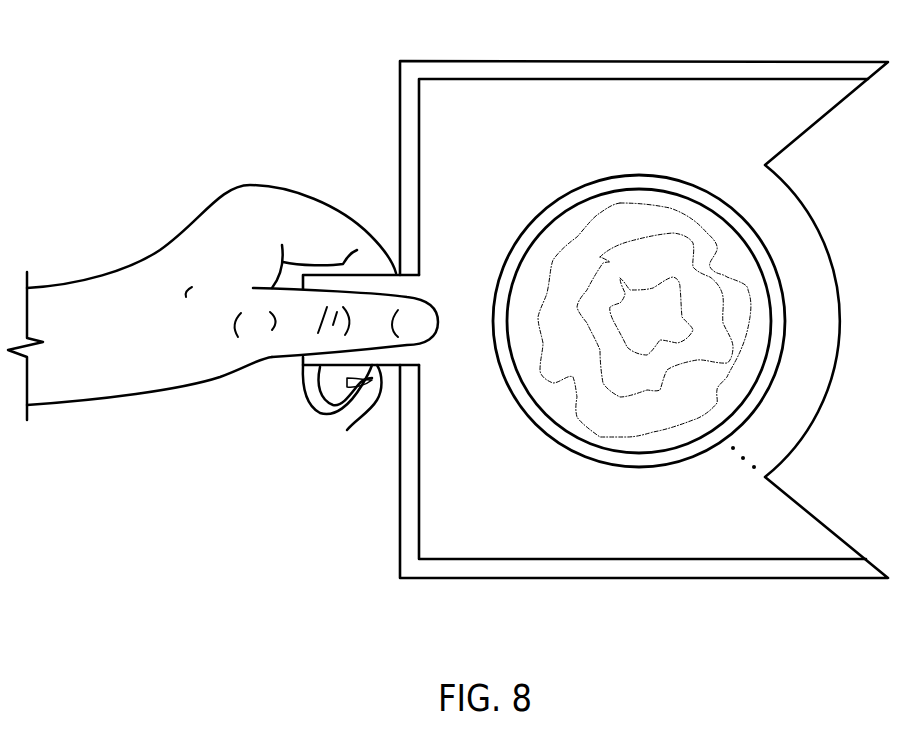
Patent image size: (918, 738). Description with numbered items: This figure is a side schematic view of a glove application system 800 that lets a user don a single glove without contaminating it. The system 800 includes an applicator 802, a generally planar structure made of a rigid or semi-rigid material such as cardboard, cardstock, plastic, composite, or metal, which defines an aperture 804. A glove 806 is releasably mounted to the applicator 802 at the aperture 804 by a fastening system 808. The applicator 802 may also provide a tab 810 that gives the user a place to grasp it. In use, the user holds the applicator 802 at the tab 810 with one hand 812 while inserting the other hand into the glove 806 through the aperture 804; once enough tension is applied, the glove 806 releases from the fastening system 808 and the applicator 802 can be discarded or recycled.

The glove application system 800 is at (326, 82).
The applicator 802 is at (437, 523).
The aperture 804 is at (553, 224).
The glove 806 is at (637, 214).
The fastening system 808 is at (689, 447).
The tab 810 is at (347, 430).
The hand 812 is at (201, 249).